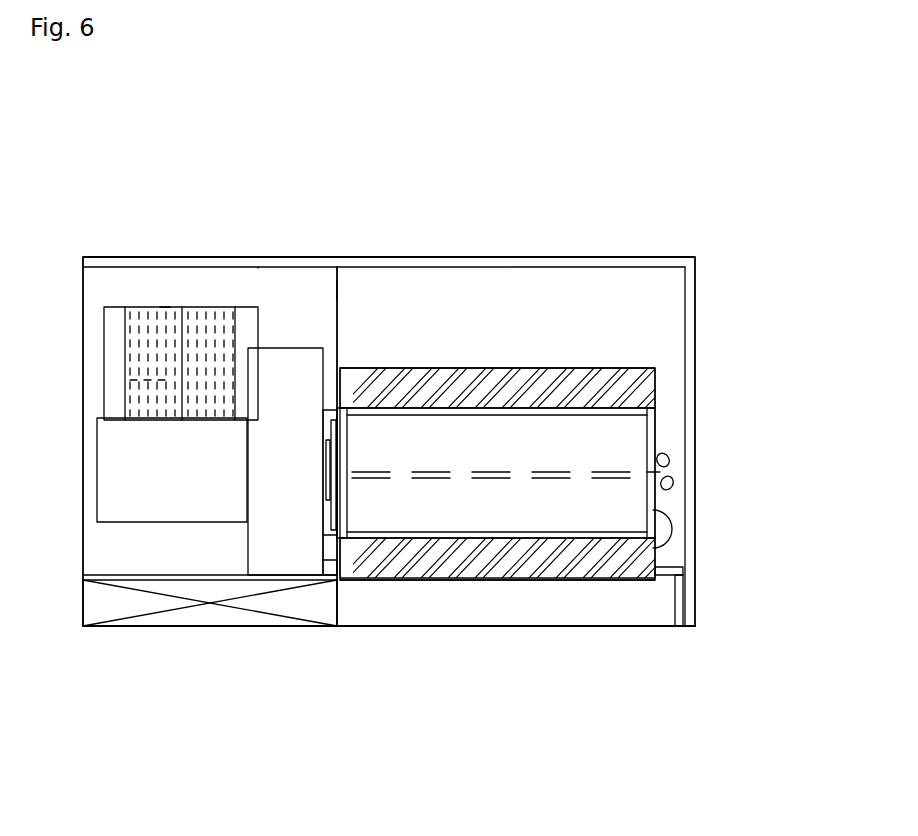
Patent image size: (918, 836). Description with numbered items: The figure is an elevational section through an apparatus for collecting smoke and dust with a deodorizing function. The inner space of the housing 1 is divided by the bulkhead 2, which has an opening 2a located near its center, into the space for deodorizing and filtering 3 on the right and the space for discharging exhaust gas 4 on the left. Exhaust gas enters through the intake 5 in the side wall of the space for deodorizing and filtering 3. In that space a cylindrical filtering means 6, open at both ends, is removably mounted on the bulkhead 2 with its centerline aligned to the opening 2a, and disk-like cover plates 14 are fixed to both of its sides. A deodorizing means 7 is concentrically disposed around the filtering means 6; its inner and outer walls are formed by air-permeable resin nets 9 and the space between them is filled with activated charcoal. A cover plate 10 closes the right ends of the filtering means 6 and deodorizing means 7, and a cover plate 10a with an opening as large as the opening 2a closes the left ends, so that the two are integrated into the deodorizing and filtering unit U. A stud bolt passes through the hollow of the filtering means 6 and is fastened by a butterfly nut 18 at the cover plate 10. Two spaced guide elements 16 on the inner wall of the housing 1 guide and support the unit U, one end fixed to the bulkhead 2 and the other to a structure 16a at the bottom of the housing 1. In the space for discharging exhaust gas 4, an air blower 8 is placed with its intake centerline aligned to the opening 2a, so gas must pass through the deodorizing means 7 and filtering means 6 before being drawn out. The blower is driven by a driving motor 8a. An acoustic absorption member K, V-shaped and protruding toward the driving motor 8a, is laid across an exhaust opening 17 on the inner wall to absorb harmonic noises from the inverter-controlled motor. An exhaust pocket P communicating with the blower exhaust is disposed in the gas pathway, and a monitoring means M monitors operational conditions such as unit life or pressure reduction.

The housing 1 is at (568, 262).
The bulkhead 2 is at (337, 320).
The opening 2a is at (347, 483).
The space for deodorizing and filtering 3 is at (648, 282).
The space for discharging exhaust gas 4 is at (331, 293).
The intake 5 is at (683, 514).
The filtering means 6 is at (478, 395).
The deodorizing means 7 is at (535, 580).
The air blower 8 is at (265, 385).
The driving motor 8a is at (145, 478).
The net 9 is at (420, 390).
The cover plate 10 is at (656, 428).
The cover plate 10a is at (345, 395).
The cover plate 14 is at (335, 626).
The guide element 16 is at (676, 568).
The structure 16a is at (676, 590).
The exhaust opening 17 is at (160, 380).
The butterfly nut 18 is at (667, 463).
The acoustic absorption member K is at (155, 306).
The monitoring means M is at (165, 306).
The exhaust pocket P is at (132, 543).
The deodorizing and filtering unit U is at (638, 356).